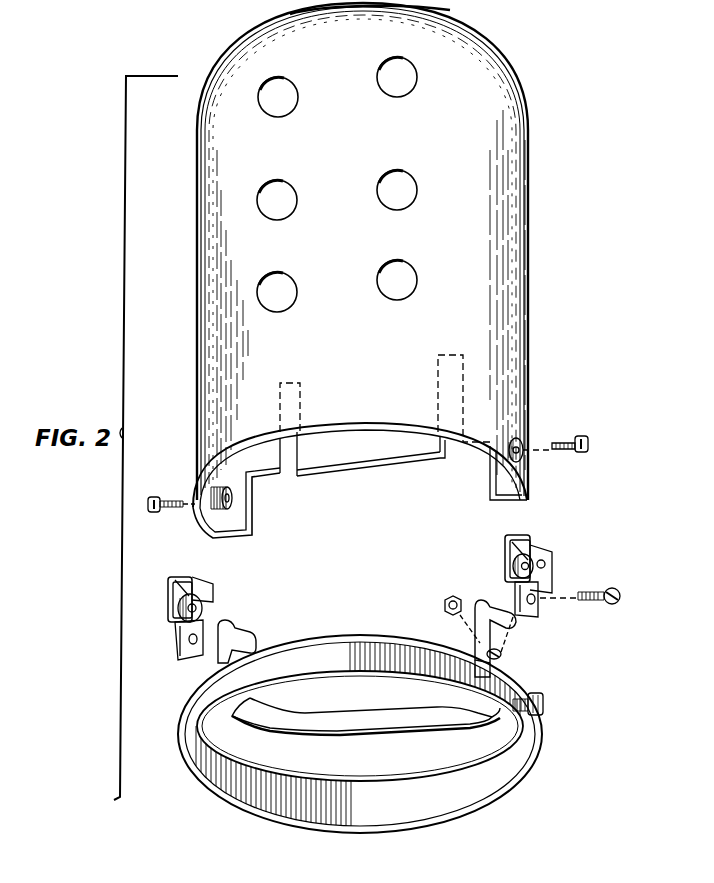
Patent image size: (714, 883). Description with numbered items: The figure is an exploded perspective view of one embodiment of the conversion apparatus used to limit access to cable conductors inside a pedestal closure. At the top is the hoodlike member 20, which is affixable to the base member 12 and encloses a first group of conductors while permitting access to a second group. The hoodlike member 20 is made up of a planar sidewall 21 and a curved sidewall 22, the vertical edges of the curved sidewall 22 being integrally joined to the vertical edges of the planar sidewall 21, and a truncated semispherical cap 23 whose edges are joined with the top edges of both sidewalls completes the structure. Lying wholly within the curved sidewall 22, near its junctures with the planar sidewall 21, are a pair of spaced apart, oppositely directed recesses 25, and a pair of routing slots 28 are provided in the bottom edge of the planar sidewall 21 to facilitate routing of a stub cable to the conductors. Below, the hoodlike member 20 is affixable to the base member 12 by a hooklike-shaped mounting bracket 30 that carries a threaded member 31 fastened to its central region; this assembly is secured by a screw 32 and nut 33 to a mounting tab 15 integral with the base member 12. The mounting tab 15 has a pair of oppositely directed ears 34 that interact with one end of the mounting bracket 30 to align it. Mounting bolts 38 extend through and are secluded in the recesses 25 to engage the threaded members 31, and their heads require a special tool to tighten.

The base member 12 is at (540, 740).
The mounting tab 15 is at (507, 638).
The hoodlike member 20 is at (528, 277).
The planar sidewall 21 is at (253, 505).
The curved sidewall 22 is at (414, 455).
The truncated semispherical cap 23 is at (487, 27).
The recesses 25 is at (523, 450).
The routing slots 28 is at (286, 467).
The mounting bracket 30 is at (167, 595).
The threaded member 31 is at (185, 602).
The screw 32 is at (613, 590).
The nut 33 is at (445, 602).
The ears 34 is at (227, 623).
The mounting bolts 38 is at (583, 453).